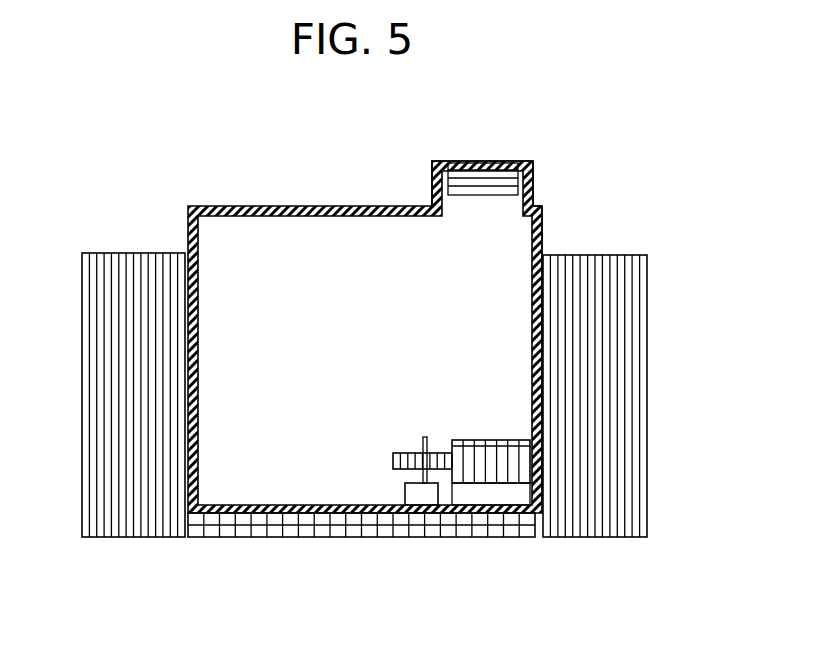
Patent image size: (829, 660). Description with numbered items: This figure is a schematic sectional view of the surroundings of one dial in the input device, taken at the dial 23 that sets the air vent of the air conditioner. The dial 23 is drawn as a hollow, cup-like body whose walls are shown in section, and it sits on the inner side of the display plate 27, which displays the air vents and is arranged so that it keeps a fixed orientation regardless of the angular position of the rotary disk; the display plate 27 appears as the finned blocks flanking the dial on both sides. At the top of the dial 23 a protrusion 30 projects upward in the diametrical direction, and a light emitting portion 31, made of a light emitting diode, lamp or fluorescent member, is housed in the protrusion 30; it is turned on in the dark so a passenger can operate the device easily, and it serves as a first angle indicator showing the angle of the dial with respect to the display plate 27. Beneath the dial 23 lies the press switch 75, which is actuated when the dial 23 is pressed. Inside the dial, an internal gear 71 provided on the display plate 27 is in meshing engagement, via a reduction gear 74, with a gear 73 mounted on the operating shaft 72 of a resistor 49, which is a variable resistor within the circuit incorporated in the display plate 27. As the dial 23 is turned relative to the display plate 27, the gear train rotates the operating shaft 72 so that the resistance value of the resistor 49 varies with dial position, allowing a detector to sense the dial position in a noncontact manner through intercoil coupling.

The dial 23 is at (218, 205).
The protrusion 30 is at (535, 163).
The light emitting portion 31 is at (468, 165).
The internal gear 71 is at (543, 285).
The display plate 27 is at (633, 278).
The press switch 75 is at (262, 530).
The reduction gear 74 is at (530, 478).
The operating shaft 72 is at (423, 437).
The gear 73 is at (432, 465).
The resistor 49 is at (417, 498).